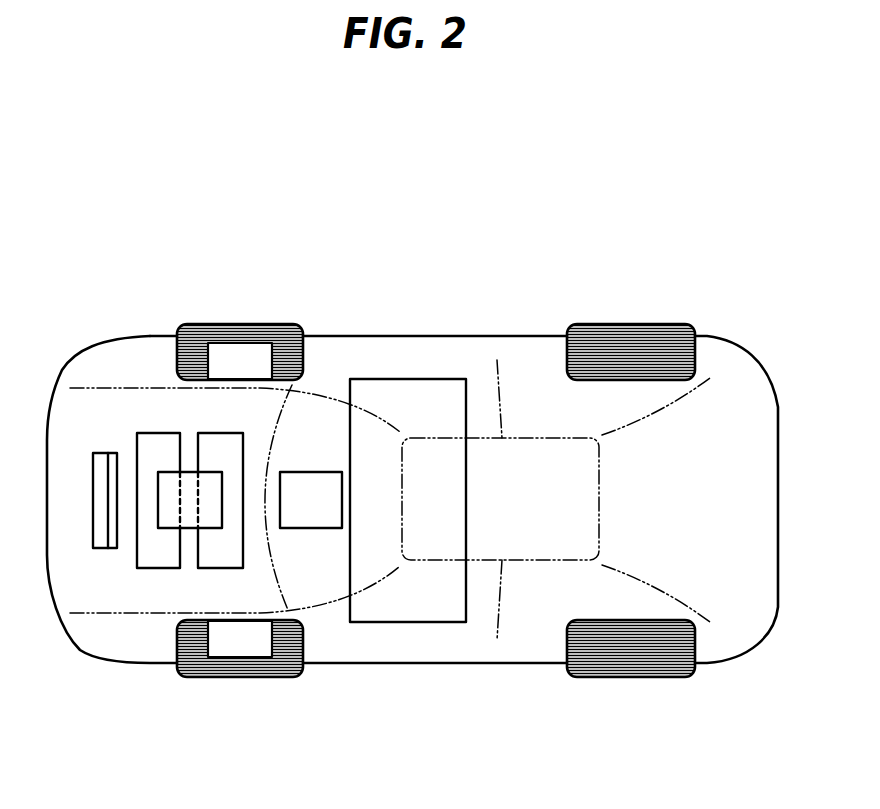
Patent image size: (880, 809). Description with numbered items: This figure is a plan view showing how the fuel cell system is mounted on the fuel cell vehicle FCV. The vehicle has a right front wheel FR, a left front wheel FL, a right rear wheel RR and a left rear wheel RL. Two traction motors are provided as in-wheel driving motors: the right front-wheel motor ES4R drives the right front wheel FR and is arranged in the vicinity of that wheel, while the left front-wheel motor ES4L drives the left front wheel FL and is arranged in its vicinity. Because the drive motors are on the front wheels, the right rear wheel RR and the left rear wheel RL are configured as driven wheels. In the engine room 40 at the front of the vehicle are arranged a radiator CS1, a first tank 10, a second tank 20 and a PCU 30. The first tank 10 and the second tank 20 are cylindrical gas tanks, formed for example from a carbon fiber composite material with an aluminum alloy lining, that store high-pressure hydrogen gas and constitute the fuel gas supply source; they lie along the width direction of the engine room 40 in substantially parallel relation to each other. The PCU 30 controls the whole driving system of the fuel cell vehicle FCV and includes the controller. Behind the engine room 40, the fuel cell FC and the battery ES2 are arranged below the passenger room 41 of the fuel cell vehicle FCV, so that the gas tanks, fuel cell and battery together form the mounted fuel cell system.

The fuel cell vehicle FCV is at (481, 252).
The right front wheel FR is at (193, 337).
The left front wheel FL is at (196, 662).
The right rear wheel RR is at (628, 342).
The left rear wheel RL is at (627, 660).
The right front-wheel motor ES4R is at (241, 356).
The left front-wheel motor ES4L is at (232, 647).
The battery ES2 is at (310, 513).
The radiator CS1 is at (105, 540).
The fuel cell FC is at (420, 607).
The first tank 10 is at (162, 555).
The second tank 20 is at (215, 555).
The PCU (power control unit) 30 is at (172, 482).
The engine room 40 is at (263, 412).
The passenger room 41 is at (484, 358).